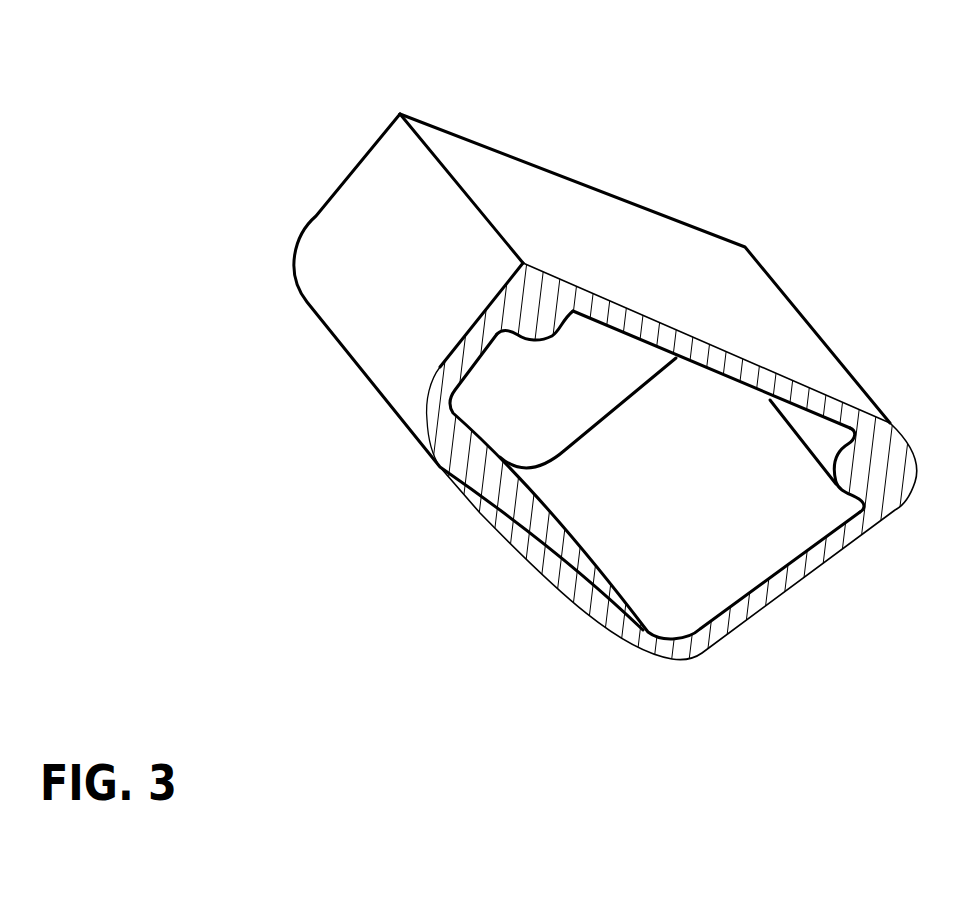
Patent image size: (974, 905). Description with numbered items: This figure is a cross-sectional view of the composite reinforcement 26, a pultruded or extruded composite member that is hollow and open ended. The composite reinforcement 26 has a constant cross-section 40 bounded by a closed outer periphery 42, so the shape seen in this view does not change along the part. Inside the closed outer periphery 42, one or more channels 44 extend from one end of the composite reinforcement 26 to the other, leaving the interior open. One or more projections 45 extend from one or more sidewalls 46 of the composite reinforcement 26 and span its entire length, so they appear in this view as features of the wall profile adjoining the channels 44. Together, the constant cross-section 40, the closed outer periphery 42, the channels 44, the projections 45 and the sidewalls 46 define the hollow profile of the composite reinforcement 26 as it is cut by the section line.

The composite reinforcement 26 is at (197, 237).
The constant cross-section 40 is at (810, 322).
The closed outer periphery 42 is at (780, 590).
The channel 44 is at (544, 423).
The projection 45 is at (547, 340).
The sidewall 46 is at (605, 232).